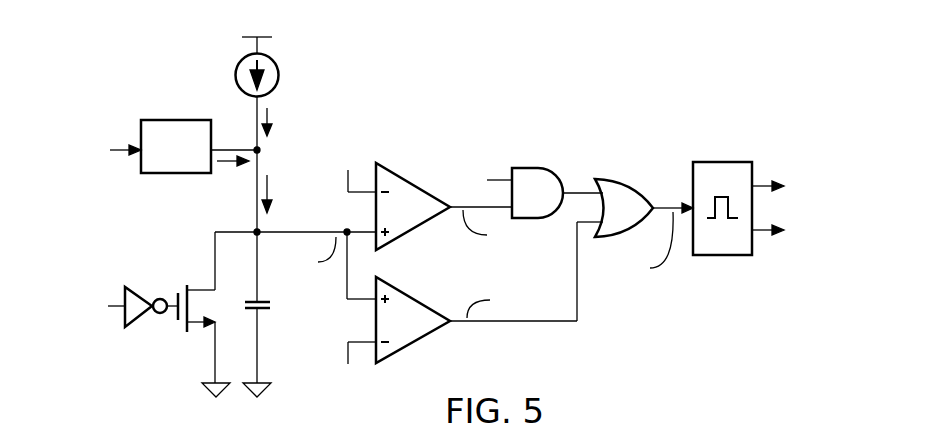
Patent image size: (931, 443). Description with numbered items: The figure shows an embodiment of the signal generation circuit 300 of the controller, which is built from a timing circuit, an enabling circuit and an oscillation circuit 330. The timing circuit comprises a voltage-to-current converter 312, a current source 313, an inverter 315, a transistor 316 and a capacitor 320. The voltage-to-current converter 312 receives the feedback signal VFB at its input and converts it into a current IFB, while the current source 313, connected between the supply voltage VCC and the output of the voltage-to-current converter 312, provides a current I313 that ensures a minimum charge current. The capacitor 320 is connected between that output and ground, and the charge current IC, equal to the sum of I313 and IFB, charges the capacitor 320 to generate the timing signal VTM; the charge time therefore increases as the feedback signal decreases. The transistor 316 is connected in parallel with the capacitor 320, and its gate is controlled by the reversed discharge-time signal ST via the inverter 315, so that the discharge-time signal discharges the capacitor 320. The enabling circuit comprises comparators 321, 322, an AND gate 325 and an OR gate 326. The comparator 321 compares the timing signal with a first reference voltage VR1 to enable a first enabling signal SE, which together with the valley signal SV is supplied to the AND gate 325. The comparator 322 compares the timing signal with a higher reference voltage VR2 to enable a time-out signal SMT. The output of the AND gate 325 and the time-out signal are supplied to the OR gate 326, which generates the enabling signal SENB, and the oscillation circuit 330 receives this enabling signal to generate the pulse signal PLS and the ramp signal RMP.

The signal generation circuit 300 is at (772, 68).
The voltage-to-current converter 312 is at (180, 118).
The current source 313 is at (280, 78).
The inverter 315 is at (138, 290).
The transistor 316 is at (190, 338).
The capacitor 320 is at (272, 305).
The comparator 321 is at (400, 170).
The comparator 322 is at (398, 285).
The AND gate 325 is at (533, 165).
The OR gate 326 is at (623, 178).
The oscillation circuit 330 is at (720, 162).